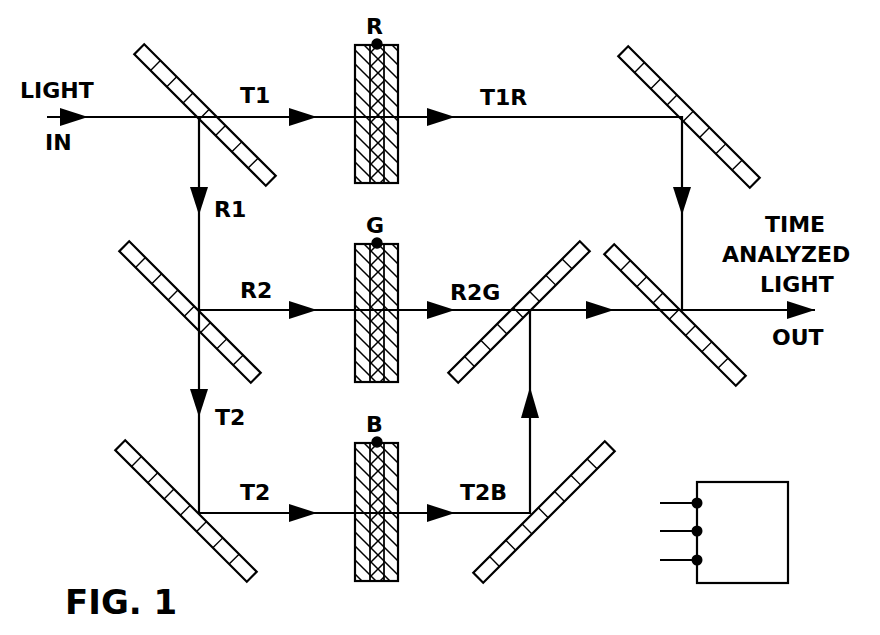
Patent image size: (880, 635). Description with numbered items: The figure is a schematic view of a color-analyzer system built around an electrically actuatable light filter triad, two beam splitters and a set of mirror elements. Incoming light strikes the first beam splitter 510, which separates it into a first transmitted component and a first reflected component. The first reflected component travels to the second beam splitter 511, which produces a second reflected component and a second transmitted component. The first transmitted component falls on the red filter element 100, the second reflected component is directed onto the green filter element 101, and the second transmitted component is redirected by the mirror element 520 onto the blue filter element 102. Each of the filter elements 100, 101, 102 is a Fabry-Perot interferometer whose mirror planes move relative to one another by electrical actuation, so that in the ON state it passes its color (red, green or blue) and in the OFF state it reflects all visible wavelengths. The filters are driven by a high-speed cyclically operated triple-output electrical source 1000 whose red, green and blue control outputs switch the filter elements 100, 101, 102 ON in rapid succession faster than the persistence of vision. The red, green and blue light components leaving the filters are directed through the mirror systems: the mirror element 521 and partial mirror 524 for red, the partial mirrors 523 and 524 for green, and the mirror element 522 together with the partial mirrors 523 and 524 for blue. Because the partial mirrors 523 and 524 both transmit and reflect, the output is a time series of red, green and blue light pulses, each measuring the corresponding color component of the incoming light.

The first beam splitter 510 is at (162, 56).
The second beam splitter 511 is at (150, 254).
The mirror element 520 is at (150, 454).
The mirror element 521 is at (653, 58).
The mirror element 522 is at (576, 454).
The partial mirror 523 is at (558, 254).
The partial mirror 524 is at (638, 255).
The red filter element 100 is at (408, 82).
The green filter element 101 is at (408, 284).
The blue filter element 102 is at (408, 482).
The triple-output electrical source 1000 is at (749, 482).